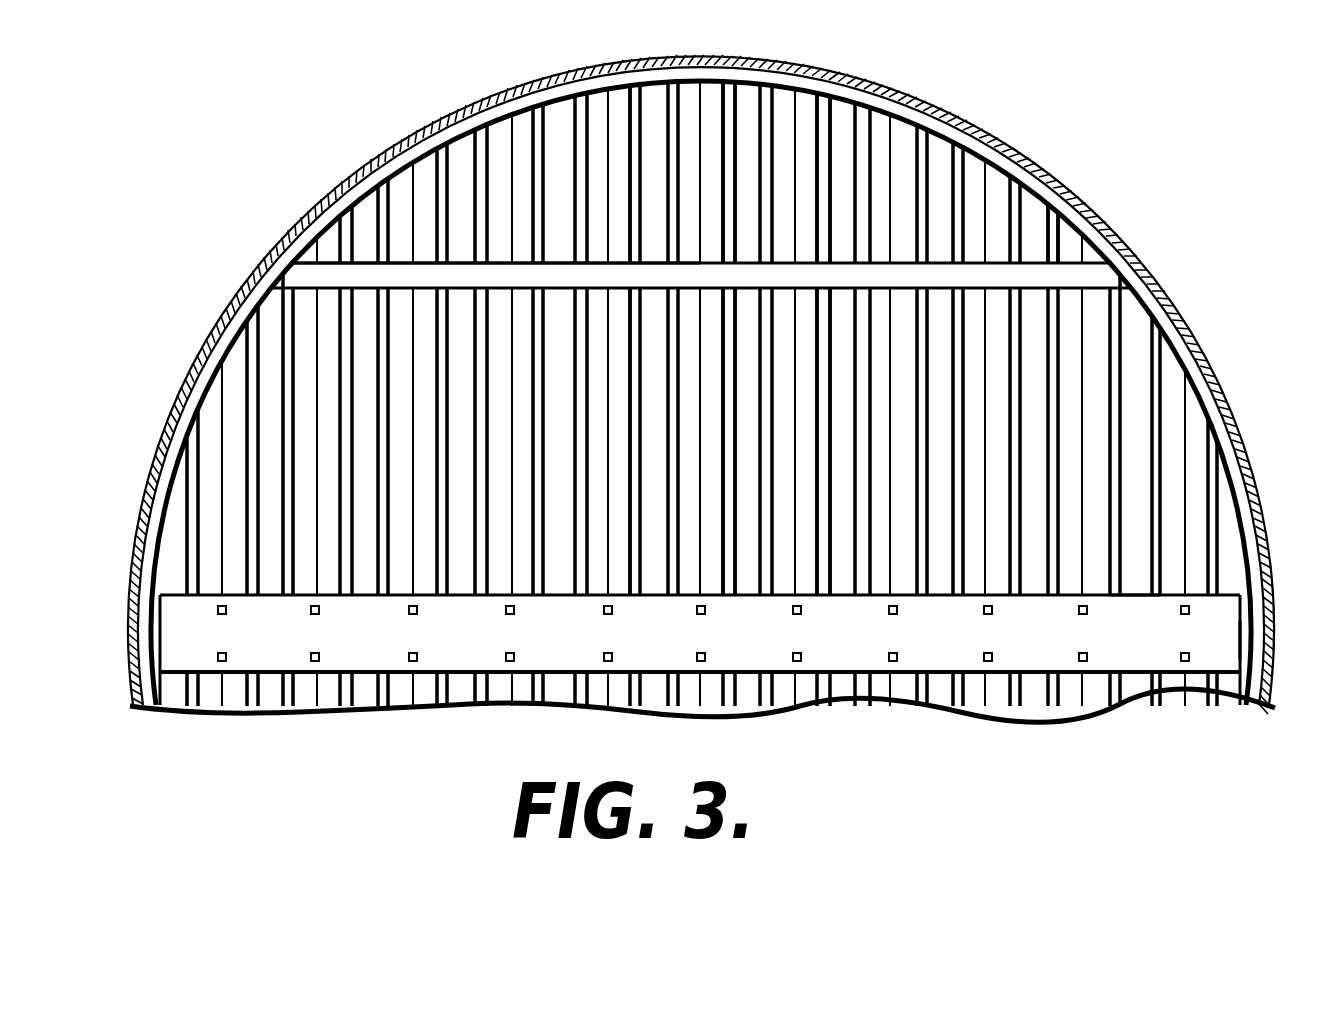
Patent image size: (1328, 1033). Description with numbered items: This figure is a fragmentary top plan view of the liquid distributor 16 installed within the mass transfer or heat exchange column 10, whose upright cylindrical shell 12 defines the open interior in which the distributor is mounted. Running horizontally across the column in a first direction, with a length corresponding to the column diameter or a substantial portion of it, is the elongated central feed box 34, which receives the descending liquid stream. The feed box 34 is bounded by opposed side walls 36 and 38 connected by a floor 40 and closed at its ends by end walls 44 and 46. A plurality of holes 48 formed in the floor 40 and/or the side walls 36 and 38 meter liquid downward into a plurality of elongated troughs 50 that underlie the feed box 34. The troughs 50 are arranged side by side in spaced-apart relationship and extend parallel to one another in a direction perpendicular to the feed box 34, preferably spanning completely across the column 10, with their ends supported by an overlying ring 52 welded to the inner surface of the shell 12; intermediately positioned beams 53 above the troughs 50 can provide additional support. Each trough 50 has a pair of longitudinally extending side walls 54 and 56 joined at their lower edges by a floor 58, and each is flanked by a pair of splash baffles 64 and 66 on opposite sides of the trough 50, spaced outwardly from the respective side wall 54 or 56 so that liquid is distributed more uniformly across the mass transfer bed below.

The mass transfer or heat exchange column 10 is at (953, 106).
The upright cylindrical shell 12 is at (1018, 157).
The liquid distributor 16 is at (1236, 636).
The central feed box 34 is at (1232, 655).
The side wall of feed box 36 is at (1140, 596).
The side wall of feed box 38 is at (1152, 672).
The floor of feed box 40 is at (1137, 658).
The end wall of feed box 44 is at (1238, 606).
The end wall of feed box 46 is at (162, 652).
The holes 48 is at (984, 656).
The elongated troughs 50 is at (792, 582).
The overlying ring 52 is at (1080, 222).
The intermediately positioned beams 53 is at (1105, 274).
The trough side wall 54 is at (592, 572).
The trough side wall 56 is at (626, 572).
The trough floor 58 is at (624, 298).
The splash baffle 64 is at (758, 581).
The splash baffle 66 is at (837, 586).